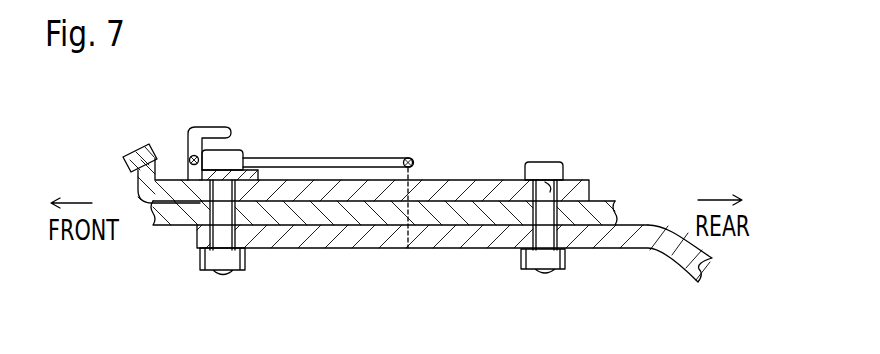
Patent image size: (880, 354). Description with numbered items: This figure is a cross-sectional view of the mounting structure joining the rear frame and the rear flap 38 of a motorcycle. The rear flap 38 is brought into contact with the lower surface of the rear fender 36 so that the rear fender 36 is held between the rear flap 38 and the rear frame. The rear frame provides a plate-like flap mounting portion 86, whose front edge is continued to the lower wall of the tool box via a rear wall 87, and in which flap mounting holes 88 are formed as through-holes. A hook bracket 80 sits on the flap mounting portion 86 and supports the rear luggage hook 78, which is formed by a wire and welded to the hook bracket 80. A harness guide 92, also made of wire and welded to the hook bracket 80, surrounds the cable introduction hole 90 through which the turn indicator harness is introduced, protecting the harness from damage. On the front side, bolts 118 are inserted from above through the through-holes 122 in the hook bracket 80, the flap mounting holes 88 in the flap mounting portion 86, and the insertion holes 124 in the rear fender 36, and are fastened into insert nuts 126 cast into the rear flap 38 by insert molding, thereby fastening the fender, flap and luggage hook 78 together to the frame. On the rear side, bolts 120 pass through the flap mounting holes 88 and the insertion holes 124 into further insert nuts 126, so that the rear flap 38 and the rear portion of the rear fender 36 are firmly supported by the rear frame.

The rear fender 36 is at (604, 212).
The rear flap 38 is at (362, 250).
The rear luggage hook 78 is at (204, 127).
The hook bracket 80 is at (189, 174).
The flap mounting portion 86 is at (580, 187).
The rear wall 87 is at (128, 157).
The flap mounting holes 88 is at (223, 184).
The cable introduction hole 90 is at (409, 158).
The harness guide 92 is at (333, 158).
The bolts 118 is at (220, 157).
The bolts 120 is at (541, 165).
The through-holes 122 is at (189, 157).
The insertion holes 124 is at (216, 218).
The insert nuts 126 is at (212, 265).